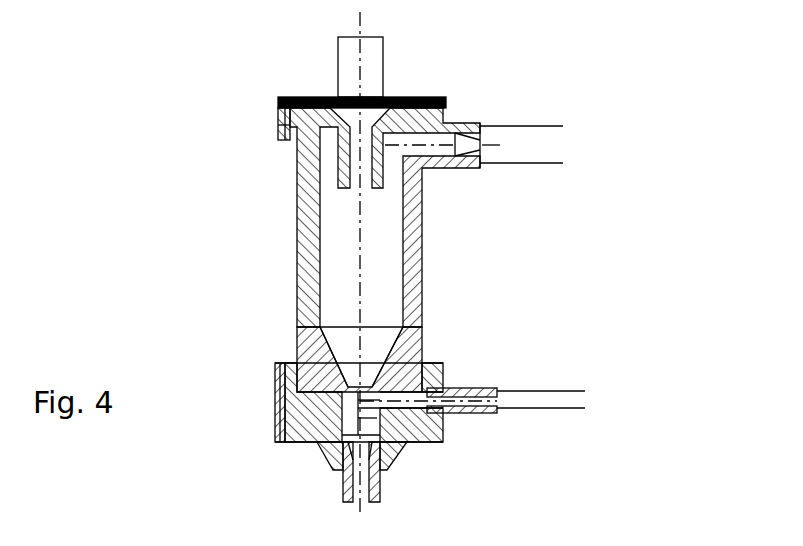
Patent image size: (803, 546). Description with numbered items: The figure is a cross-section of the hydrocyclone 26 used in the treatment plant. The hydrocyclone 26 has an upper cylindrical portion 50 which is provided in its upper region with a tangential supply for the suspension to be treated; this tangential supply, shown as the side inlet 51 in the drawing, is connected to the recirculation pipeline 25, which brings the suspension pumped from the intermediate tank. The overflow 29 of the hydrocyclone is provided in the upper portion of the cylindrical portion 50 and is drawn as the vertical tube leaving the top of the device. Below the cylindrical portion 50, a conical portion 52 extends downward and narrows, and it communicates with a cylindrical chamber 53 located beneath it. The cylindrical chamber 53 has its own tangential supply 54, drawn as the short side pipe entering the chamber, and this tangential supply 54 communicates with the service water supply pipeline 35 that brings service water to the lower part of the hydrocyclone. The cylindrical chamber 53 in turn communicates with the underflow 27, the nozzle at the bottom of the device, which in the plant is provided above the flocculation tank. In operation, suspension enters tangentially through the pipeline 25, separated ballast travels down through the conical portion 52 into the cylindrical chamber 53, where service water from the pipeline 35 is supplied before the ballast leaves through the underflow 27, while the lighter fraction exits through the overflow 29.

The pipeline 25 is at (528, 125).
The hydrocyclone 26 is at (552, 278).
The underflow 27 is at (343, 488).
The overflow 29 is at (373, 67).
The service water supply pipeline 35 is at (550, 390).
The cylindrical portion 50 is at (422, 215).
The side inlet 51 is at (472, 152).
The conical portion 52 is at (422, 353).
The cylindrical chamber 53 is at (435, 445).
The tangential supply 54 is at (473, 413).